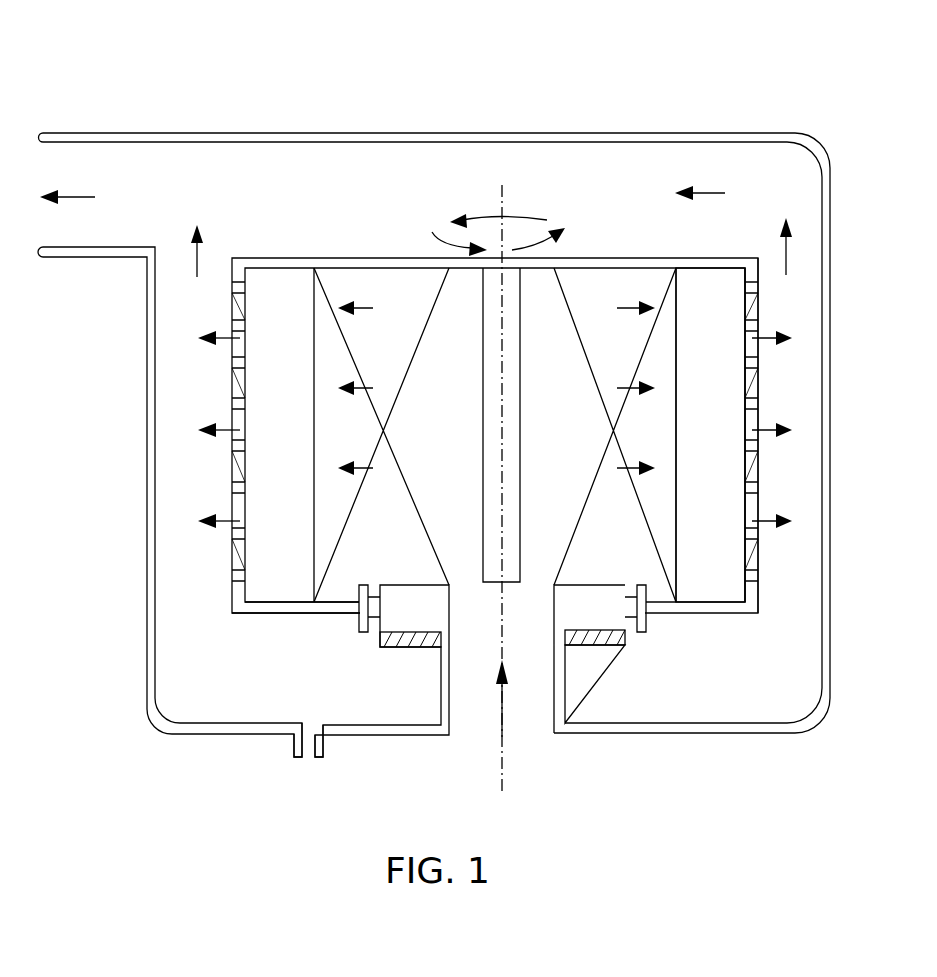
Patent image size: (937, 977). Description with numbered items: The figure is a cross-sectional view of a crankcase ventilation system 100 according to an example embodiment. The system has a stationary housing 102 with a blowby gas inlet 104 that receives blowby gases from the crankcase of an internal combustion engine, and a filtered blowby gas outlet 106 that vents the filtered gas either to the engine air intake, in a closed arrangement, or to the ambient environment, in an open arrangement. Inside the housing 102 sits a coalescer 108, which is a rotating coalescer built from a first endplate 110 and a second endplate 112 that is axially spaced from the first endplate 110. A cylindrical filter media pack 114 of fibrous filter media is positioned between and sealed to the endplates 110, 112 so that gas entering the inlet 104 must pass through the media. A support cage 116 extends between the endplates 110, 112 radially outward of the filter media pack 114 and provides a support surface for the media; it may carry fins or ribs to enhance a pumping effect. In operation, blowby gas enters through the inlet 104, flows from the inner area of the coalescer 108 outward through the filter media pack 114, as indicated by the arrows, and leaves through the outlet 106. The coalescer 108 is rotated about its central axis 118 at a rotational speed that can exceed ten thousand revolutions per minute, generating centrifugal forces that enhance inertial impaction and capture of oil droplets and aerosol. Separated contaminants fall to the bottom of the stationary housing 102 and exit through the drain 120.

The crankcase ventilation system 100 is at (120, 68).
The stationary housing 102 is at (150, 508).
The blowby gas inlet 104 is at (472, 730).
The filtered blowby gas outlet 106 is at (120, 235).
The coalescer 108 is at (192, 379).
The first endplate 110 is at (622, 258).
The second endplate 112 is at (289, 608).
The filter media pack 114 is at (730, 440).
The support cage 116 is at (757, 582).
The central axis 118 is at (505, 752).
The drain 120 is at (297, 750).